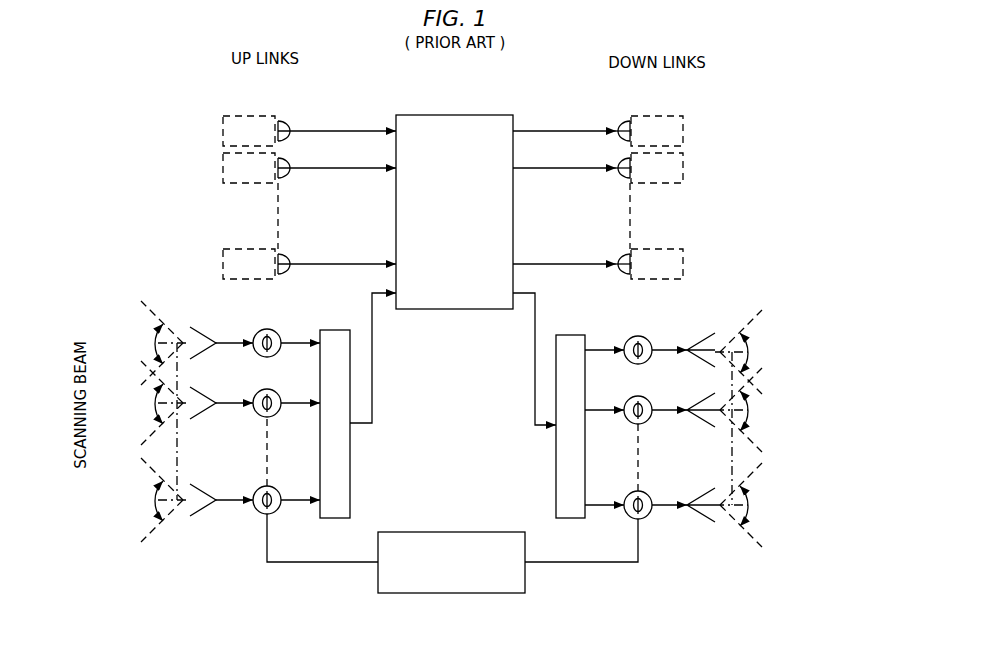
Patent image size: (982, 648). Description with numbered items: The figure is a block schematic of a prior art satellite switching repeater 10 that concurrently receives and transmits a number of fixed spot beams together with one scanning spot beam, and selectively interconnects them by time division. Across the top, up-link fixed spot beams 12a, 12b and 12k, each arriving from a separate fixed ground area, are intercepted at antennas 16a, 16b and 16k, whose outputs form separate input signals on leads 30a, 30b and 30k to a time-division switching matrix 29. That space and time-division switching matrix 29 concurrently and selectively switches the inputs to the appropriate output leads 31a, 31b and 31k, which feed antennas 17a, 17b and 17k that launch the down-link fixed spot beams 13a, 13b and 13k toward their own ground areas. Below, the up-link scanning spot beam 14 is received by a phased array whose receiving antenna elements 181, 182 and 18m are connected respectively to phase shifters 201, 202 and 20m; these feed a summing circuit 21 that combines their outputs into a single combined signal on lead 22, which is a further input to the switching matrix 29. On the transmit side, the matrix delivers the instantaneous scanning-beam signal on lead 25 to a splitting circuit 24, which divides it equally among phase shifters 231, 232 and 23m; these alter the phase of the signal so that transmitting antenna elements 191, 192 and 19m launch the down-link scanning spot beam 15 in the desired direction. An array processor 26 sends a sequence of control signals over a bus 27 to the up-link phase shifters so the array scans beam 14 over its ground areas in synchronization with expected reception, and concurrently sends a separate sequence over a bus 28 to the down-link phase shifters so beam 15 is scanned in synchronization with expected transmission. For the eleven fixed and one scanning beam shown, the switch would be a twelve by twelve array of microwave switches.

The satellite switching repeater 10 is at (447, 106).
The up-link fixed spot beam 12a is at (249, 131).
The up-link fixed spot beam 12b is at (249, 168).
The up-link fixed spot beam 12k is at (249, 264).
The down-link fixed spot beam 13a is at (657, 131).
The down-link fixed spot beam 13b is at (657, 168).
The down-link fixed spot beam 13k is at (657, 264).
The up-link scanning spot beam 14 is at (150, 305).
The down-link scanning spot beam 15 is at (758, 312).
The antenna 16a is at (290, 123).
The antenna 16b is at (290, 162).
The antenna 16k is at (290, 257).
The antenna 17a is at (619, 121).
The antenna 17b is at (619, 160).
The antenna 17k is at (619, 255).
The receiving antenna element 181 is at (201, 333).
The receiving antenna element 182 is at (201, 395).
The receiving antenna element 18m is at (201, 491).
The transmitting antenna element 191 is at (706, 338).
The transmitting antenna element 192 is at (706, 398).
The transmitting antenna element 19m is at (706, 493).
The phase shifter 201 is at (276, 331).
The phase shifter 202 is at (276, 393).
The phase shifter 20m is at (276, 489).
The summing circuit 21 is at (335, 330).
The lead 22 is at (373, 387).
The phase shifter 231 is at (632, 338).
The phase shifter 232 is at (632, 398).
The phase shifter 23m is at (632, 493).
The splitting circuit 24 is at (568, 335).
The lead 25 is at (534, 387).
The array processor 26 is at (449, 532).
The bus 27 is at (324, 566).
The bus 28 is at (594, 566).
The time-division switching matrix 29 is at (456, 309).
The lead 30a is at (357, 129).
The lead 30b is at (357, 166).
The lead 30k is at (358, 262).
The output lead 31a is at (537, 129).
The output lead 31b is at (537, 166).
The output lead 31k is at (537, 262).